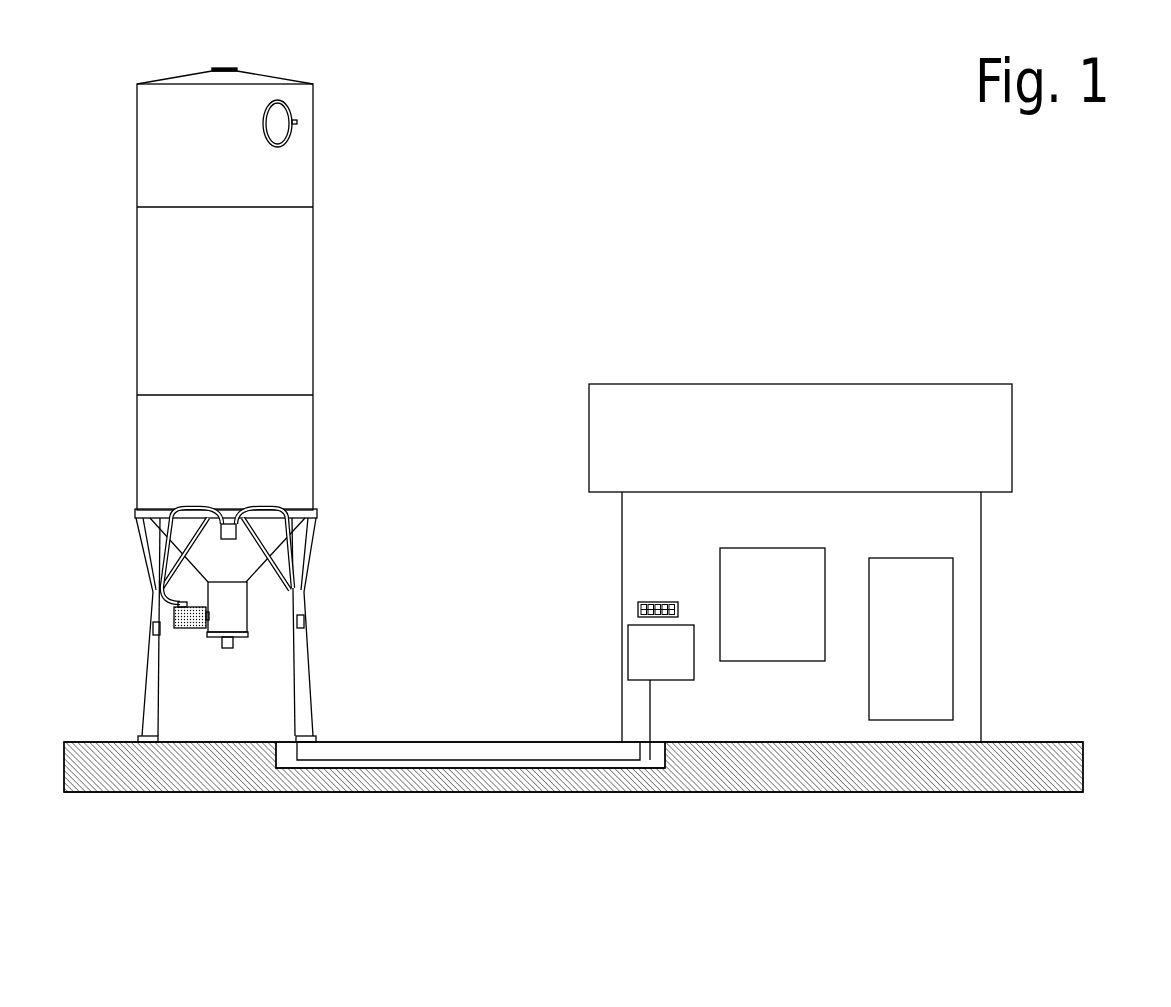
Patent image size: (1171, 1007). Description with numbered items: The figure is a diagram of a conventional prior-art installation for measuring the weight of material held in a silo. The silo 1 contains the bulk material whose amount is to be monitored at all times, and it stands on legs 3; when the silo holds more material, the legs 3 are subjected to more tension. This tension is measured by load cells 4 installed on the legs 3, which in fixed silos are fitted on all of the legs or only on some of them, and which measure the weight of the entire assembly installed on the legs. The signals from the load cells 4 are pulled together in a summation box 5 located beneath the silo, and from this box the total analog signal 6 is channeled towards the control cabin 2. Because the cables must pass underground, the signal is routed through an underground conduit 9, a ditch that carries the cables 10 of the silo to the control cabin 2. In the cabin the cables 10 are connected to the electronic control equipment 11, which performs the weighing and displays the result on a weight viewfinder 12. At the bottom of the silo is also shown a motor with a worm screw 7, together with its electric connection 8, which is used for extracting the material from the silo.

The silo 1 is at (320, 256).
The control cabin 2 is at (984, 542).
The legs 3 is at (145, 663).
The load cells 4 is at (306, 617).
The summation box 5 is at (226, 524).
The signal 6 is at (257, 545).
The motor with a worm screw 7 is at (190, 633).
The electric connection 8 is at (184, 601).
The underground conduit 9 is at (287, 753).
The cables 10 is at (645, 707).
The electronic control equipment 11 is at (627, 658).
The viewfinder 12 is at (636, 609).